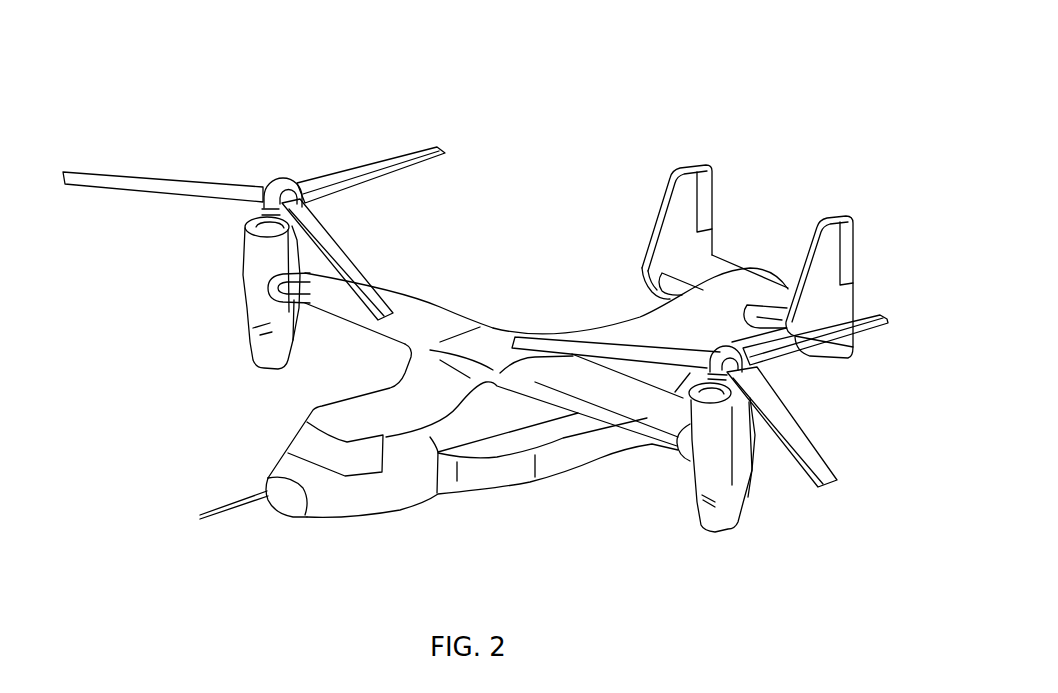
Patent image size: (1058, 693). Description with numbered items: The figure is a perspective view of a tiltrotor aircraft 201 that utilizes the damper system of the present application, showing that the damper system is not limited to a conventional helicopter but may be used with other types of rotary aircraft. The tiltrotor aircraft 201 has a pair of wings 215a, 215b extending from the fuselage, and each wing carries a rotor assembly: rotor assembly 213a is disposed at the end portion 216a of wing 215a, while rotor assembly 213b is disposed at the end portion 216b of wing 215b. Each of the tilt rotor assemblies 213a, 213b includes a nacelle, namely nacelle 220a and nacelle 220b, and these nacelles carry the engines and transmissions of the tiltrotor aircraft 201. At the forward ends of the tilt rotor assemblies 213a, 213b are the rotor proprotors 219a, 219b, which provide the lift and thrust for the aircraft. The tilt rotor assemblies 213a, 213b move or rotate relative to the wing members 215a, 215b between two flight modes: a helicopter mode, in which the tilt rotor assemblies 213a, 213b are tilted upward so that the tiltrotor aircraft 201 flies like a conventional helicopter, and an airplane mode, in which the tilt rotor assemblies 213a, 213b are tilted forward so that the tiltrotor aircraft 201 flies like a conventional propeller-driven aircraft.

The tiltrotor aircraft 201 is at (194, 106).
The rotor assembly 213a is at (255, 220).
The rotor assembly 213b is at (739, 388).
The wing 215a is at (420, 300).
The wing 215b is at (578, 414).
The end portion 216a is at (320, 256).
The end portion 216b is at (676, 395).
The proprotor 219a is at (400, 158).
The proprotor 219b is at (772, 384).
The nacelle 220a is at (247, 311).
The nacelle 220b is at (745, 506).